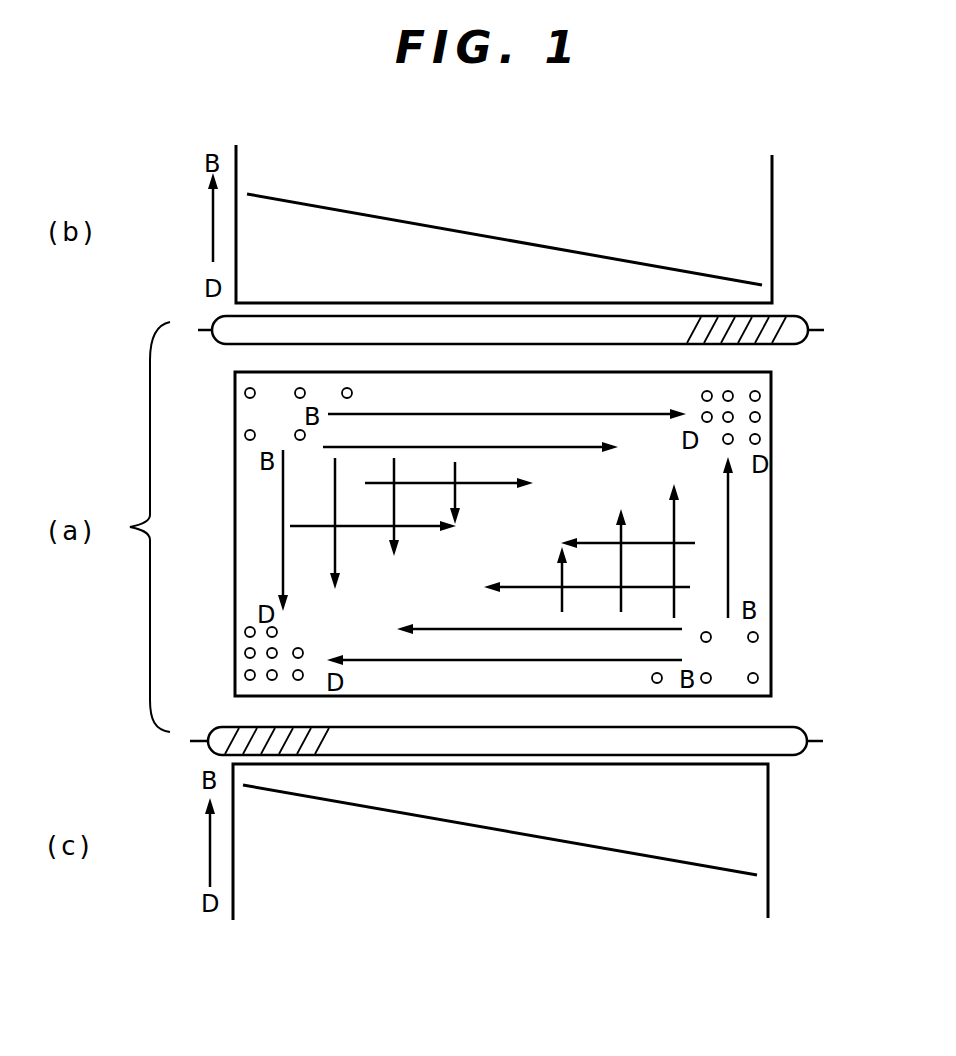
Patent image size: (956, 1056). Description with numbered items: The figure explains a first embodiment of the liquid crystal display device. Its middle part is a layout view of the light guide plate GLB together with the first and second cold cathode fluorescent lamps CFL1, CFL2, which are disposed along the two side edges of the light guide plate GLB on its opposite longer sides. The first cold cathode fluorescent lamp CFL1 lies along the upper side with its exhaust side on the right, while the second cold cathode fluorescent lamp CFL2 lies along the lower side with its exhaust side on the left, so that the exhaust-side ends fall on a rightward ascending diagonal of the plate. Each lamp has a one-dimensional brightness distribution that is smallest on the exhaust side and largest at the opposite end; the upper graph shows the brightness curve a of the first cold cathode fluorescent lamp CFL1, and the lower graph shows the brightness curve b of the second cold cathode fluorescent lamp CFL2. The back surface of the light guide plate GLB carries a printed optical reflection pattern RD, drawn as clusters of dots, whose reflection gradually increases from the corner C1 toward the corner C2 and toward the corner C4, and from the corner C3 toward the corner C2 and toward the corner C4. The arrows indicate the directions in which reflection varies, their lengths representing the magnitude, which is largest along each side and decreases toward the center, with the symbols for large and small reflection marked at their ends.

The first cold cathode fluorescent lamp CFL1 is at (820, 331).
The second cold cathode fluorescent lamp CFL2 is at (788, 757).
The light guide plate GLB is at (771, 525).
The optical reflection pattern RD is at (760, 396).
The corner C1 is at (799, 705).
The corner C2 is at (799, 368).
The corner C3 is at (211, 368).
The corner C4 is at (211, 698).
The brightness distribution curve of CFL1 a is at (557, 248).
The brightness distribution curve of CFL2 b is at (499, 830).